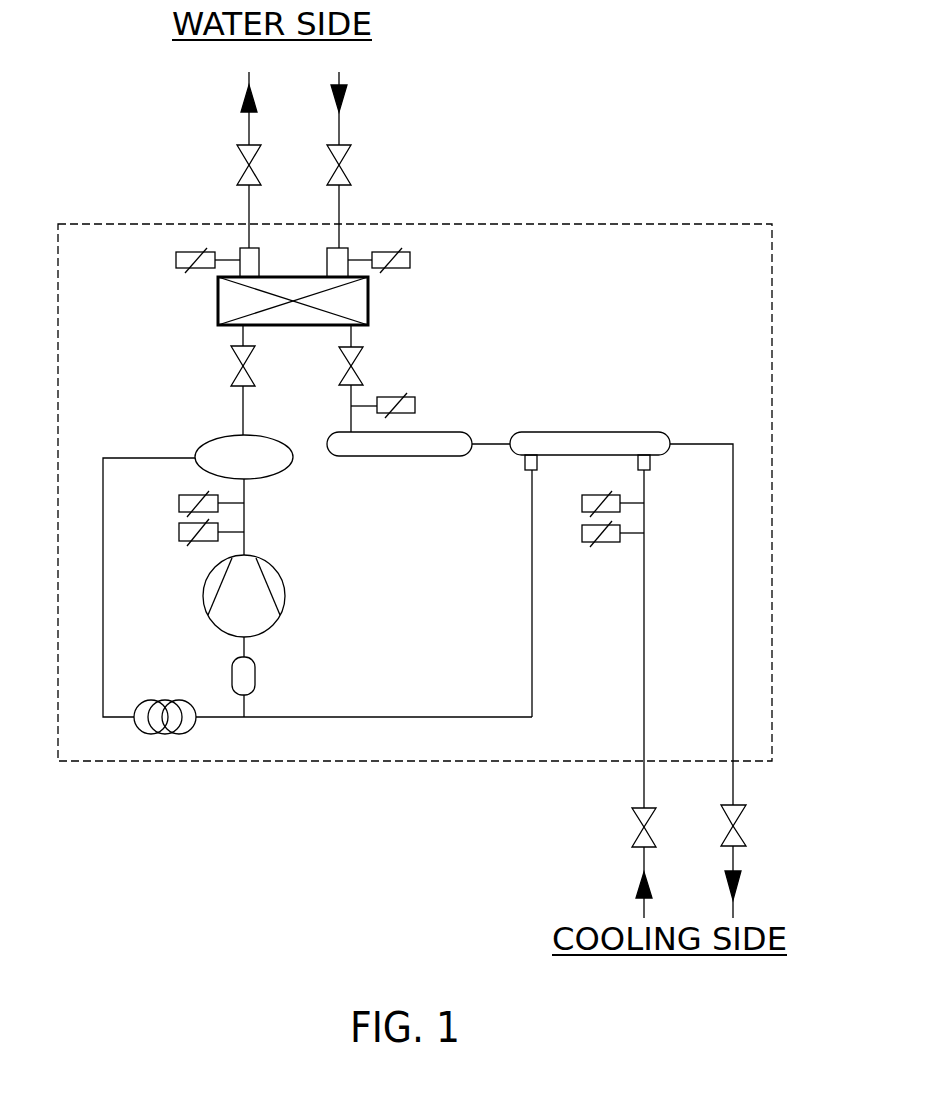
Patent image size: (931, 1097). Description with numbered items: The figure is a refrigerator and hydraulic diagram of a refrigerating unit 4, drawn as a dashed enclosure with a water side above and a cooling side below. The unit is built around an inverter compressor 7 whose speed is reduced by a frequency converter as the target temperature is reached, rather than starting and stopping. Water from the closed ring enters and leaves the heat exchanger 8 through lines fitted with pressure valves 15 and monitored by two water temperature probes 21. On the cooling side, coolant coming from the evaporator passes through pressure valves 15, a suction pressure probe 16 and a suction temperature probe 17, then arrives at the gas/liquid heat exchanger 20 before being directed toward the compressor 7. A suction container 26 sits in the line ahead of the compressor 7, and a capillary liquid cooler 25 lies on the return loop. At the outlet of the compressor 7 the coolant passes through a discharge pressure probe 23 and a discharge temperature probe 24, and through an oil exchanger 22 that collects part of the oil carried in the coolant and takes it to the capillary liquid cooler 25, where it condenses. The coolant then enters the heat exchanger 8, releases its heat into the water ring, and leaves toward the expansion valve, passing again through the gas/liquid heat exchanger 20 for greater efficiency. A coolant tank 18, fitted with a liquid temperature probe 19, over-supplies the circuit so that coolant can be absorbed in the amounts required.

The refrigerating unit 4 is at (630, 222).
The compressor 7 is at (288, 593).
The heat exchanger 8 is at (368, 298).
The pressure valves 15 is at (237, 148).
The suction pressure probe 16 is at (582, 538).
The suction temperature probe 17 is at (592, 500).
The coolant tank 18 is at (416, 455).
The liquid temperature probe 19 is at (415, 398).
The gas/liquid heat exchanger 20 is at (625, 430).
The water temperature probes 21 is at (203, 261).
The oil exchanger 22 is at (213, 440).
The discharge pressure probe 23 is at (182, 498).
The discharge temperature probe 24 is at (180, 537).
The capillary liquid cooler 25 is at (172, 735).
The suction container 26 is at (258, 676).